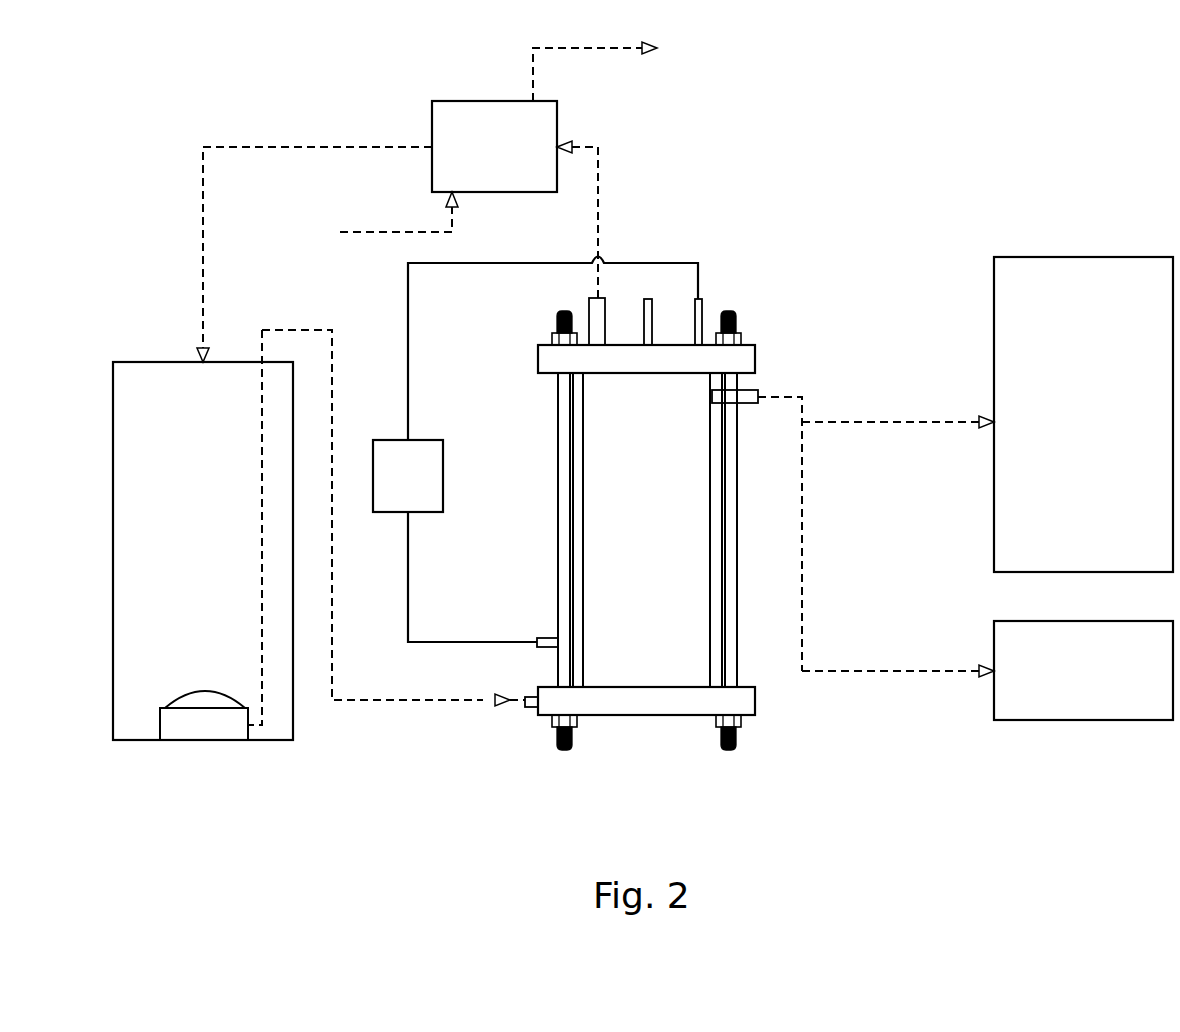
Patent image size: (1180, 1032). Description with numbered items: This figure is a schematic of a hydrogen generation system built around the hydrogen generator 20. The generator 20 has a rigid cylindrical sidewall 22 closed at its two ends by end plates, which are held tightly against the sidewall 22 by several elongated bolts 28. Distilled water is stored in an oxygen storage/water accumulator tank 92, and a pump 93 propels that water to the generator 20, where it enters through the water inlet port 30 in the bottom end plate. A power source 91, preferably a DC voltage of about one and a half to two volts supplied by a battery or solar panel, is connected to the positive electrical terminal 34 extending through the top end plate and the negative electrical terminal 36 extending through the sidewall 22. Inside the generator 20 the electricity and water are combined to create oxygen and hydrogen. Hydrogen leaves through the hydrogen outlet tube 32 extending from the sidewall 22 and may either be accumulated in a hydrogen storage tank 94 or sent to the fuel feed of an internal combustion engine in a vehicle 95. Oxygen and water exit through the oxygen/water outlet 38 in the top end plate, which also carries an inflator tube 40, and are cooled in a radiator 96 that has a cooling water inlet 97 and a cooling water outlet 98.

The hydrogen generator 20 is at (503, 393).
The sidewall 22 is at (662, 532).
The bolts 28 is at (558, 528).
The water inlet port 30 is at (528, 709).
The hydrogen outlet tube 32 is at (749, 405).
The positive electrical terminal 34 is at (703, 319).
The negative electrical terminal 36 is at (547, 638).
The oxygen/water outlet 38 is at (589, 313).
The inflator tube 40 is at (644, 323).
The power source 91 is at (420, 487).
The oxygen storage/water accumulator tank 92 is at (215, 533).
The pump 93 is at (200, 723).
The hydrogen storage tank 94 is at (1097, 435).
The vehicle 95 is at (1097, 679).
The radiator 96 is at (507, 157).
The cooling water inlet 97 is at (373, 230).
The cooling water outlet 98 is at (592, 50).